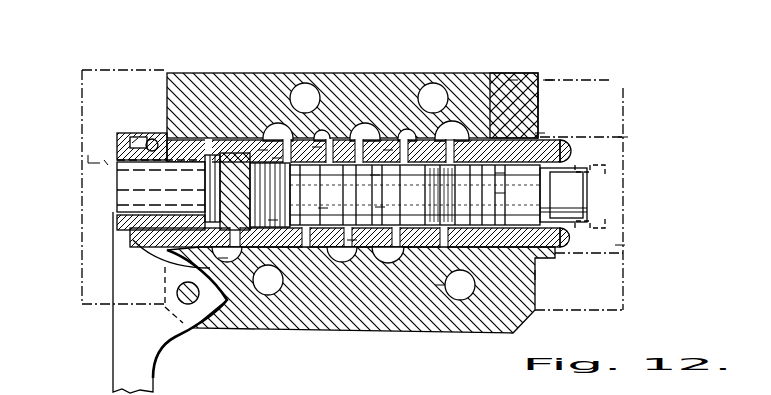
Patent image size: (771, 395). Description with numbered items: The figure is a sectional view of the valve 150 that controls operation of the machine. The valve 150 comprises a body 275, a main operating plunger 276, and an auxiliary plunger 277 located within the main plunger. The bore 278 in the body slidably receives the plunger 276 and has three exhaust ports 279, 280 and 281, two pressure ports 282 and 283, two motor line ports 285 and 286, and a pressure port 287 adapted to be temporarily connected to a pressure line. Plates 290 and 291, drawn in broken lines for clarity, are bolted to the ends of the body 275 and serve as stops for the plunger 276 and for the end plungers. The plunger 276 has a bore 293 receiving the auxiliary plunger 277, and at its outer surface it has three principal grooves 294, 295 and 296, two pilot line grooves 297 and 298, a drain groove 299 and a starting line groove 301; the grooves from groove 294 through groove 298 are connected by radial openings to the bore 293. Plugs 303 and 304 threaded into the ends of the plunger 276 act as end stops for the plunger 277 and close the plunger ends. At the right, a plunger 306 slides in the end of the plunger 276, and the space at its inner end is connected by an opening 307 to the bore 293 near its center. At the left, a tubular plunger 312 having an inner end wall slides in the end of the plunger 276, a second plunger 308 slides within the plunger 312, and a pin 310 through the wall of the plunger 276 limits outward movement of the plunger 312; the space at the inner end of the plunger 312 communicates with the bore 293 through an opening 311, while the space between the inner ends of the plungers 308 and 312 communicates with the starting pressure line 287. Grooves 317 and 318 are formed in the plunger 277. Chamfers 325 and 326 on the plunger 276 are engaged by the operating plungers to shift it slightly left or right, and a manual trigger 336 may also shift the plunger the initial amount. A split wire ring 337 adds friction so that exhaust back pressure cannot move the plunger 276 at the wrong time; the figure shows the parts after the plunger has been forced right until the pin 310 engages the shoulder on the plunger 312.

The valve 150 is at (505, 78).
The body 275 is at (548, 80).
The main operating plunger 276 is at (540, 133).
The auxiliary plunger 277 is at (405, 160).
The bore 278 is at (535, 275).
The exhaust port 279 is at (277, 158).
The exhaust port 280 is at (380, 183).
The exhaust port 281 is at (450, 140).
The pressure port 282 is at (375, 175).
The pressure port 283 is at (413, 150).
The motor line port 285 is at (380, 207).
The motor line port 286 is at (407, 247).
The pressure port 287 is at (223, 258).
The plate 290 is at (77, 101).
The plate 291 is at (613, 88).
The bore 293 is at (500, 173).
The principal groove 294 is at (317, 147).
The principal groove 295 is at (388, 150).
The principal groove 296 is at (440, 285).
The pilot line groove 297 is at (263, 150).
The pilot line groove 298 is at (513, 80).
The drain groove 299 is at (478, 262).
The starting line groove 301 is at (227, 150).
The plug 303 is at (500, 193).
The plug 304 is at (243, 150).
The plunger 306 is at (580, 195).
The opening 307 is at (522, 320).
The second plunger 308 is at (123, 175).
The pin 310 is at (147, 143).
The opening 311 is at (273, 220).
The tubular plunger 312 is at (173, 147).
The groove 317 is at (323, 208).
The groove 318 is at (352, 240).
The chamfer 325 is at (623, 137).
The chamfer 326 is at (132, 143).
The manual trigger 336 is at (125, 353).
The split wire ring 337 is at (538, 97).